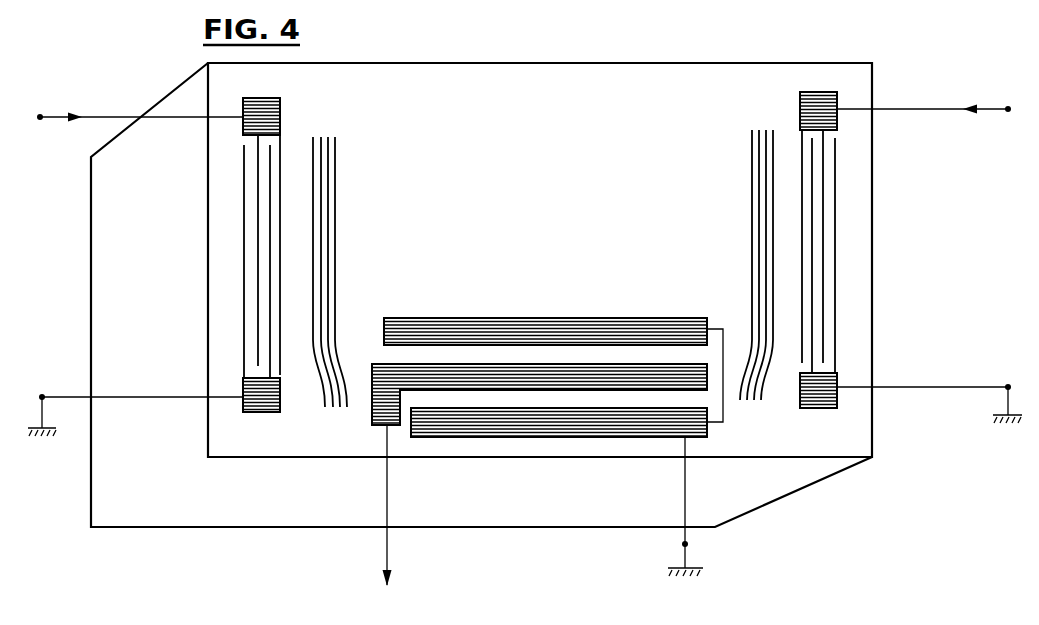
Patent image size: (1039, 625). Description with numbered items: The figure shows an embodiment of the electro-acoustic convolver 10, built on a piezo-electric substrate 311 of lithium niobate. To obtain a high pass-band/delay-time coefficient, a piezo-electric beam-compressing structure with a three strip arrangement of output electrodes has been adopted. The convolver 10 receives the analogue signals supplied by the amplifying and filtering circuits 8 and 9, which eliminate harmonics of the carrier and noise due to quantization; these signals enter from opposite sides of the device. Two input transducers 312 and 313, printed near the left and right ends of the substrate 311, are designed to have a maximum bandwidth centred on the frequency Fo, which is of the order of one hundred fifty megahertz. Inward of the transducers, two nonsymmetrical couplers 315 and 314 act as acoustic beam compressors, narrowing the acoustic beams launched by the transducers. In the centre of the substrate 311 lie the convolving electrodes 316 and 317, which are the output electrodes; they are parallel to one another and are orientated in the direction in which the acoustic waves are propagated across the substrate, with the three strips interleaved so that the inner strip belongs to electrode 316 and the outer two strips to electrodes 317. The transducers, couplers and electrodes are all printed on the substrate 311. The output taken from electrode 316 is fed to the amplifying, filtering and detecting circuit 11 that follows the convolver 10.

The substrate 311 is at (650, 77).
The electro-acoustic convolver 10 is at (548, 108).
The amplifying and filtering circuit 9 is at (138, 105).
The amplifying and filtering circuit 8 is at (925, 97).
The input transducer 312 is at (268, 220).
The input transducer 313 is at (822, 209).
The coupler 314 is at (766, 207).
The coupler 315 is at (320, 212).
The convolving electrode 316 is at (372, 414).
The convolving electrodes 317 is at (724, 410).
The amplifying, filtering and detecting circuit 11 is at (374, 507).